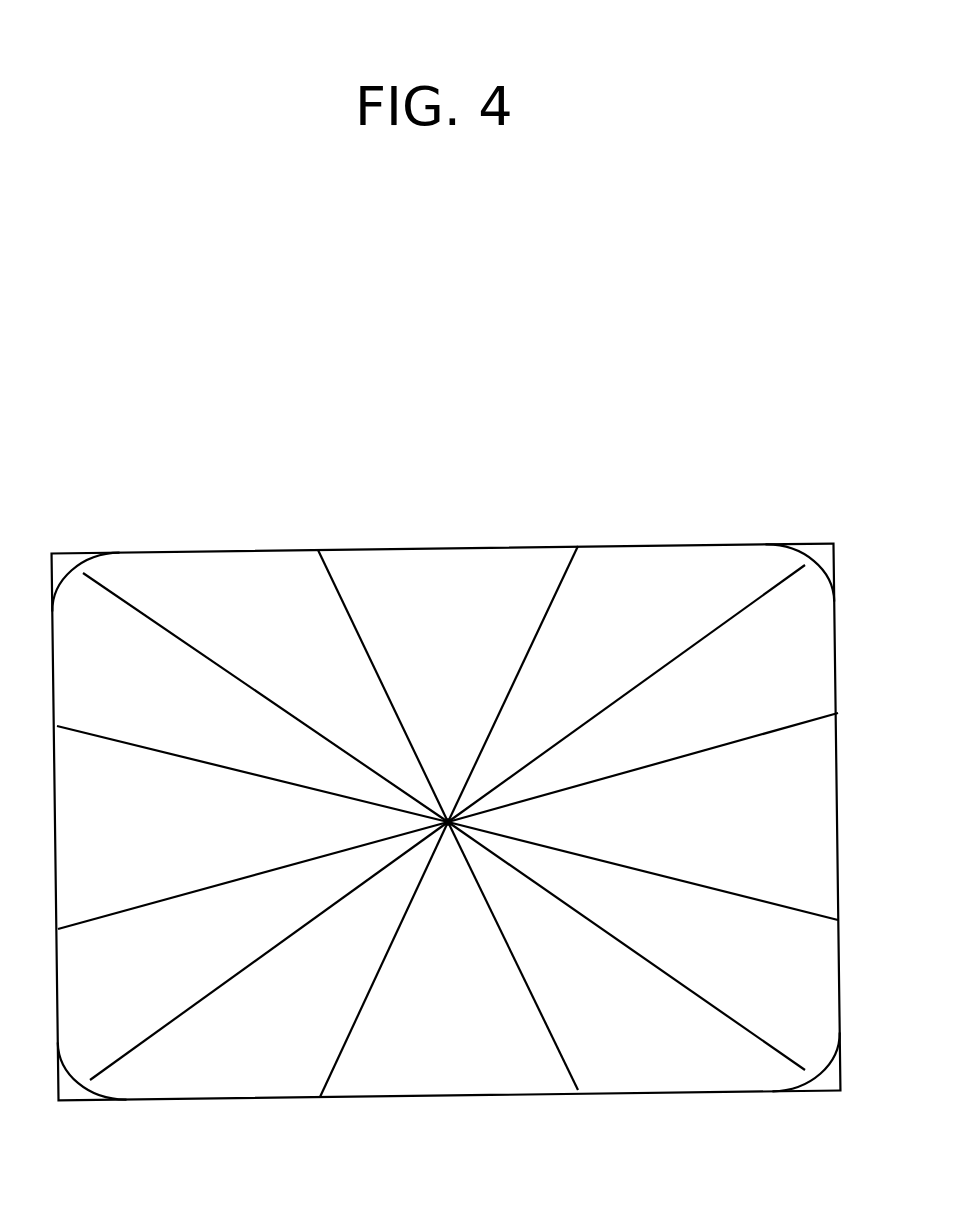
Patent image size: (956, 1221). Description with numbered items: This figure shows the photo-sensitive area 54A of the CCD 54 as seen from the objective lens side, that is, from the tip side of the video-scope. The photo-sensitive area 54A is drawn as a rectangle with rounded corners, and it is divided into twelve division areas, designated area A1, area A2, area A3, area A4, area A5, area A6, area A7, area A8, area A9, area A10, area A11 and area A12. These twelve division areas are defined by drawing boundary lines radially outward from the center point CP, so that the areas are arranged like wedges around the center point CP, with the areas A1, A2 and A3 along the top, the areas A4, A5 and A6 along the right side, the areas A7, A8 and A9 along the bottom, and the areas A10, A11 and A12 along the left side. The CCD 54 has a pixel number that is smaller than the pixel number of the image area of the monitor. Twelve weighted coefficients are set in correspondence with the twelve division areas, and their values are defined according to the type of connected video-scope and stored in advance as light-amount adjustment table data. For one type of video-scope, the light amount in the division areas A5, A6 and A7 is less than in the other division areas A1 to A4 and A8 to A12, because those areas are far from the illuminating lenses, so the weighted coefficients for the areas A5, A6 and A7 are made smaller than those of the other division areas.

The CCD 54 is at (672, 538).
The photo-sensitive area 54A is at (168, 552).
The center point CP is at (449, 815).
The area A1 is at (265, 686).
The area A2 is at (500, 684).
The area A3 is at (626, 693).
The area A4 is at (643, 742).
The area A5 is at (643, 859).
The area A6 is at (626, 946).
The area A7 is at (559, 956).
The area A8 is at (397, 959).
The area A9 is at (269, 951).
The area A10 is at (253, 902).
The area A11 is at (252, 788).
The area A12 is at (155, 693).